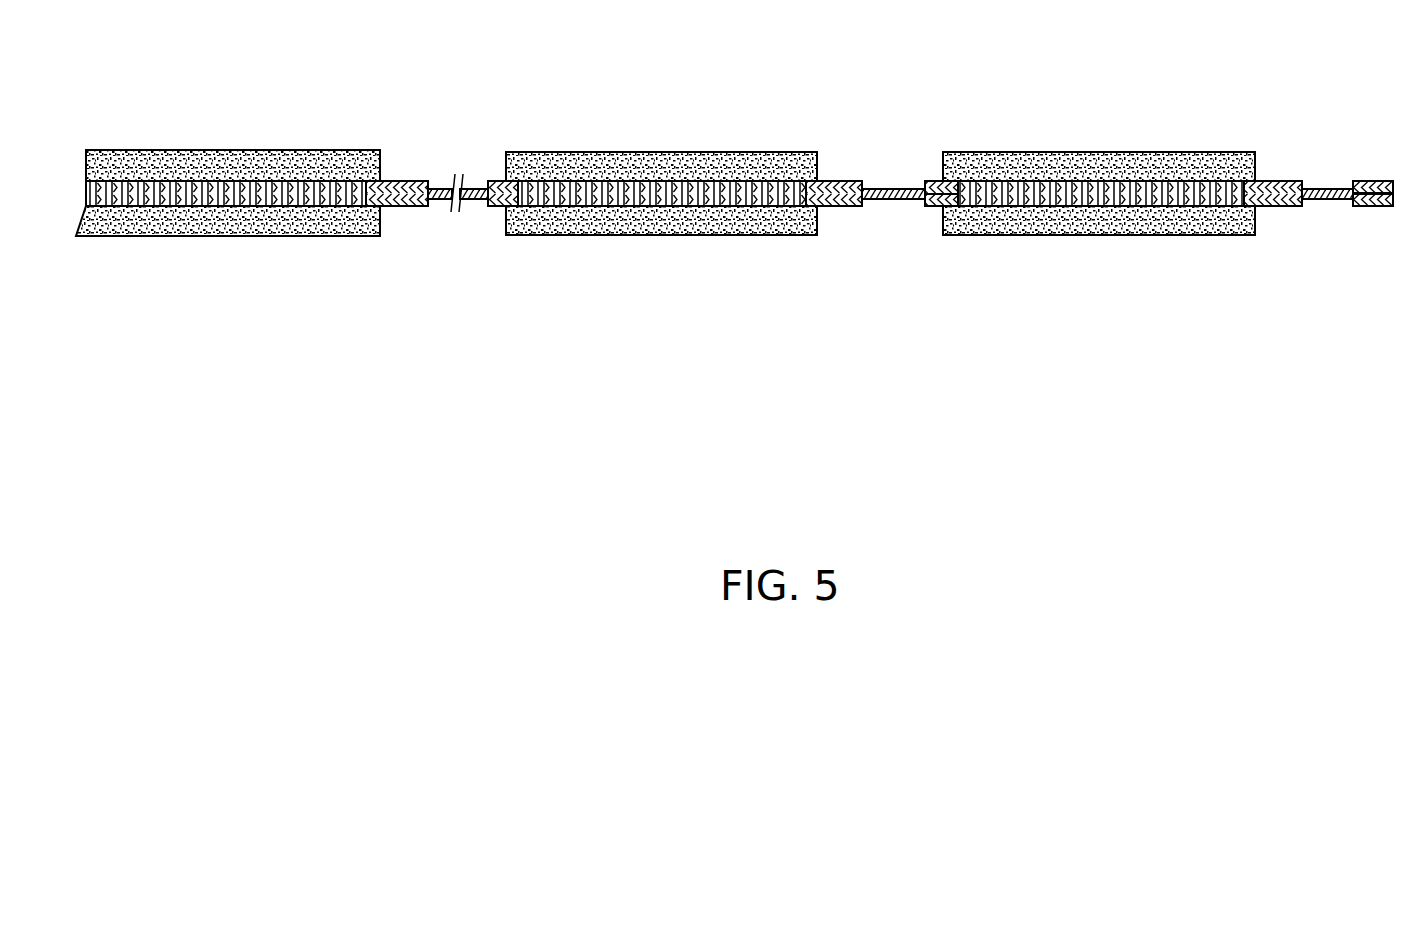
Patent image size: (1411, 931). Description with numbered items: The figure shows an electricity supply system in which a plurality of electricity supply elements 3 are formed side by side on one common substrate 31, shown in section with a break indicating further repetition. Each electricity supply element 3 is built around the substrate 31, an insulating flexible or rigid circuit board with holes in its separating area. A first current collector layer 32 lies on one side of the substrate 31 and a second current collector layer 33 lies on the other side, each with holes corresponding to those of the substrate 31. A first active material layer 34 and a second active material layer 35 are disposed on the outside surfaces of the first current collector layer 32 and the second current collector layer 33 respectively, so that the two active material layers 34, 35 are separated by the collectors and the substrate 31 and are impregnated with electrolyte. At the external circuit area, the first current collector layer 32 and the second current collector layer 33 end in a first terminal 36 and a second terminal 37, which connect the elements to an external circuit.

The electricity supply element 3 is at (236, 116).
The substrate 31 is at (890, 197).
The first current collector layer 32 is at (920, 183).
The second current collector layer 33 is at (930, 206).
The first active material layer 34 is at (1062, 152).
The second active material layer 35 is at (1003, 236).
The first terminal 36 is at (1358, 181).
The second terminal 37 is at (1362, 206).